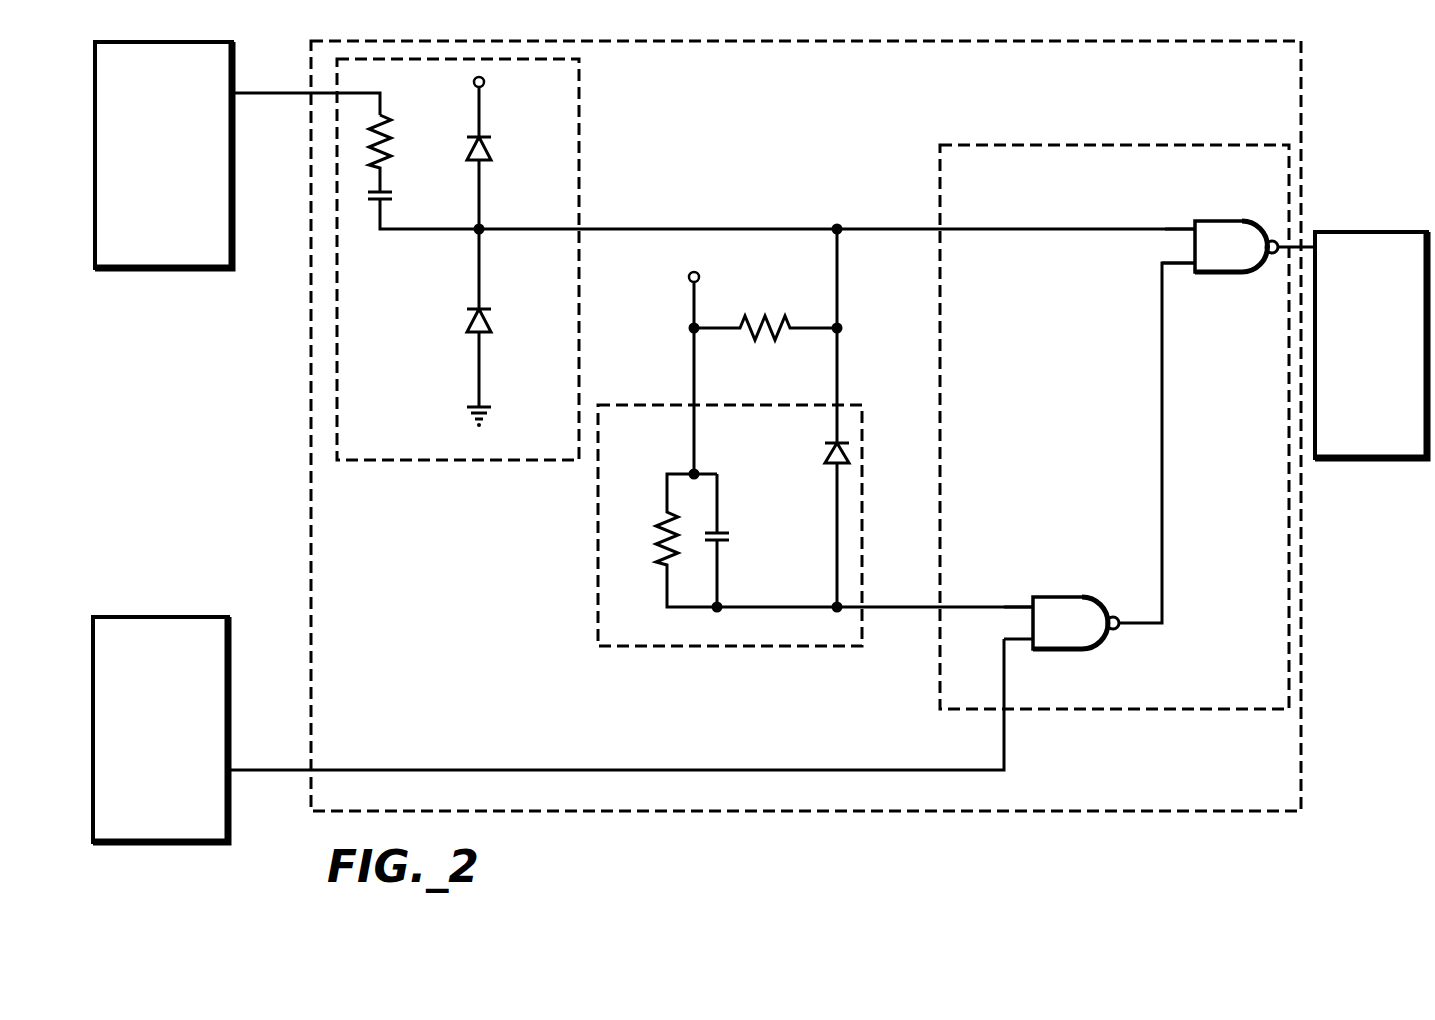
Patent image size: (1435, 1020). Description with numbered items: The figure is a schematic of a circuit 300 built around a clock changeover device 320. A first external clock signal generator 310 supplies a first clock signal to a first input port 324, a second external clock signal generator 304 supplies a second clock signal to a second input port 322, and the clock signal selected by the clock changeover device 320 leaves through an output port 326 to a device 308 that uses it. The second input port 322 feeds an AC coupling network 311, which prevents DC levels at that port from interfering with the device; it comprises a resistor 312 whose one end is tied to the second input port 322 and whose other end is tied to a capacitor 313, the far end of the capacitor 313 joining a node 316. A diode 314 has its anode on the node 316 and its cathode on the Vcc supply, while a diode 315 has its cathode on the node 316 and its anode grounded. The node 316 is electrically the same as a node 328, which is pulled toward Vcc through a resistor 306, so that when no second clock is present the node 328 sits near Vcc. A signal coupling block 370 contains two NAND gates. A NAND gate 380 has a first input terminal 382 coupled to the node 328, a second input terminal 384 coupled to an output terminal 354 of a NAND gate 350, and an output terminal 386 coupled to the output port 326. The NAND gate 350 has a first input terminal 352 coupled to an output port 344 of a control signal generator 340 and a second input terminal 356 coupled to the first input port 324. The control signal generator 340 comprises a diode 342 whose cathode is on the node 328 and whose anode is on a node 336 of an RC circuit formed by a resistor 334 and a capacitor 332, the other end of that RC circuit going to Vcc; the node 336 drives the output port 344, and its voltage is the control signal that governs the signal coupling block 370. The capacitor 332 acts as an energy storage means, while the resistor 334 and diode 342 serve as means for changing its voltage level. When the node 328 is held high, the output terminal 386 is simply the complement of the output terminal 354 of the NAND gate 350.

The circuit 300 is at (1268, 822).
The second external clock signal generator 304 is at (152, 268).
The resistor 306 is at (785, 318).
The device 308 is at (1348, 458).
The first external clock signal generator 310 is at (183, 616).
The AC coupling network 311 is at (410, 461).
The resistor 312 is at (390, 122).
The capacitor 313 is at (390, 200).
The diode 314 is at (486, 160).
The diode 315 is at (486, 332).
The node 316 is at (482, 226).
The clock changeover device 320 is at (1112, 812).
The second input port 322 is at (315, 92).
The first input port 324 is at (310, 768).
The output port 326 is at (1300, 245).
The node 328 is at (833, 226).
The capacitor 332 is at (722, 530).
The resistor 334 is at (662, 555).
The node 336 is at (720, 603).
The control signal generator 340 is at (725, 647).
The diode 342 is at (828, 460).
The output port 344 is at (862, 607).
The NAND gate 350 is at (1067, 652).
The first input terminal 352 is at (1030, 603).
The output terminal 354 is at (1112, 612).
The second input terminal 356 is at (1030, 636).
The signal coupling block 370 is at (1098, 710).
The NAND gate 380 is at (1228, 275).
The first input terminal 382 is at (1192, 228).
The second input terminal 384 is at (1192, 262).
The output terminal 386 is at (1270, 240).